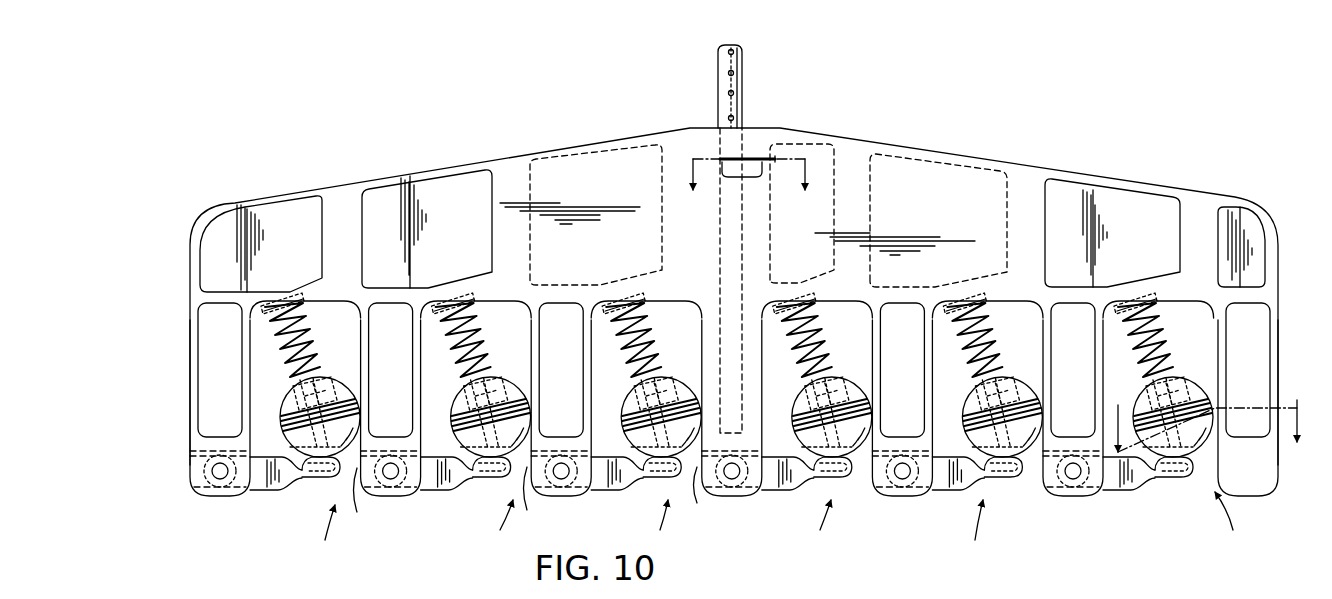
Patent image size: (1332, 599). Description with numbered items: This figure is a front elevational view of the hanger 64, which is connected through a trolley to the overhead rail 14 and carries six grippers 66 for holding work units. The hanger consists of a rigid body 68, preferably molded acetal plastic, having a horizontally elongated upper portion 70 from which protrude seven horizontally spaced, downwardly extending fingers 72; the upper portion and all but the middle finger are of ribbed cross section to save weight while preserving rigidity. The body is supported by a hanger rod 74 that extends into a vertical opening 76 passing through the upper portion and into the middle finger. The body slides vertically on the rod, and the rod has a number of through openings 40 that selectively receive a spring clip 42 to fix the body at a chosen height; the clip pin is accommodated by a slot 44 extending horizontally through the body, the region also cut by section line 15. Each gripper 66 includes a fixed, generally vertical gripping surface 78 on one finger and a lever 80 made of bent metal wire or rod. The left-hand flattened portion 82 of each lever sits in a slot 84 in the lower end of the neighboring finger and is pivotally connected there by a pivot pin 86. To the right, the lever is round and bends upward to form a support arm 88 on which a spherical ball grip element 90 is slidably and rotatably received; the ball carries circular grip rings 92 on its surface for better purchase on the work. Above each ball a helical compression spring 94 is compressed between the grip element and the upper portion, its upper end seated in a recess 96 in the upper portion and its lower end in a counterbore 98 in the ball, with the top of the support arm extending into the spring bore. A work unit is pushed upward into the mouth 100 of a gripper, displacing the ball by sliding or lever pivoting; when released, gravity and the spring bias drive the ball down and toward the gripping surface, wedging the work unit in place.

The rail 14 is at (1217, 411).
The section line 15 is at (752, 193).
The through openings 40 is at (734, 95).
The spring clip 42 is at (768, 163).
The slot 44 is at (738, 172).
The hanger 64 is at (932, 122).
The grippers 66 is at (769, 525).
The body 68 is at (850, 152).
The upper portion 70 is at (1027, 200).
The fingers 72 is at (190, 483).
The hanger rod 74 is at (744, 63).
The vertical opening 76 is at (722, 242).
The gripping surface 78 is at (362, 326).
The lever 80 is at (308, 478).
The flattened portion 82 is at (262, 482).
The slot 84 is at (193, 453).
The pivot pin 86 is at (220, 472).
The support arm 88 is at (1178, 460).
The grip element 90 is at (337, 400).
The grip rings 92 is at (282, 423).
The helical compression spring 94 is at (320, 344).
The recess 96 is at (303, 299).
The counterbore 98 is at (292, 378).
The mouth 100 is at (528, 499).